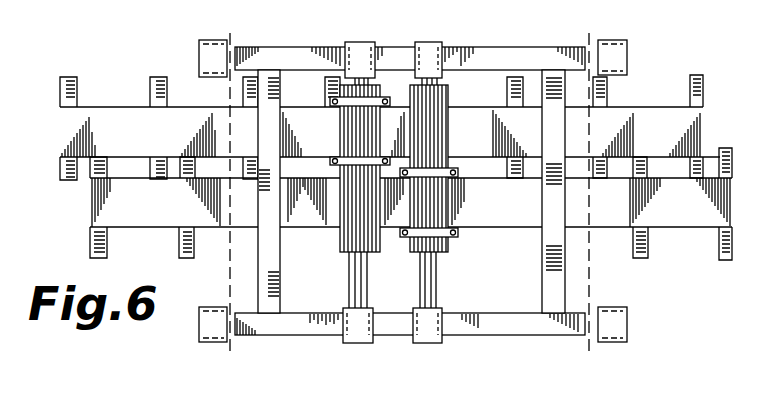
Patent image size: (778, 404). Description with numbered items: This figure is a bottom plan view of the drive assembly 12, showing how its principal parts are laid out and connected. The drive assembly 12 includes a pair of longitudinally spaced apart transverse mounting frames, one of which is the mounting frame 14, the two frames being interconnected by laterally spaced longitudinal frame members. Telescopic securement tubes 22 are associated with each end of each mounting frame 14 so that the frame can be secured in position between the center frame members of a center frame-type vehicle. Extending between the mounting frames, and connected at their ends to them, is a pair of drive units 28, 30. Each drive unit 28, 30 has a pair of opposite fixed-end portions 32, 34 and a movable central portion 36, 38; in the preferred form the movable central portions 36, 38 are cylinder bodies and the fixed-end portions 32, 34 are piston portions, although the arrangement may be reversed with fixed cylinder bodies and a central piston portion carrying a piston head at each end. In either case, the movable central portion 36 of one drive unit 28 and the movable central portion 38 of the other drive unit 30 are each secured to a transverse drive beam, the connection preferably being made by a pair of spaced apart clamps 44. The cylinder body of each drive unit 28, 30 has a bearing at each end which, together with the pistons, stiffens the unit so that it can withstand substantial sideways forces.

The drive assembly 12 is at (473, 56).
The transverse mounting frame 14 is at (483, 330).
The telescopic securement tube 22 is at (199, 52).
The drive unit 28 is at (340, 278).
The drive unit 30 is at (450, 255).
The fixed-end portion 32 is at (412, 84).
The fixed-end portion 34 is at (423, 297).
The movable central portion 36 is at (352, 205).
The movable central portion 38 is at (428, 203).
The clamp 44 is at (355, 160).